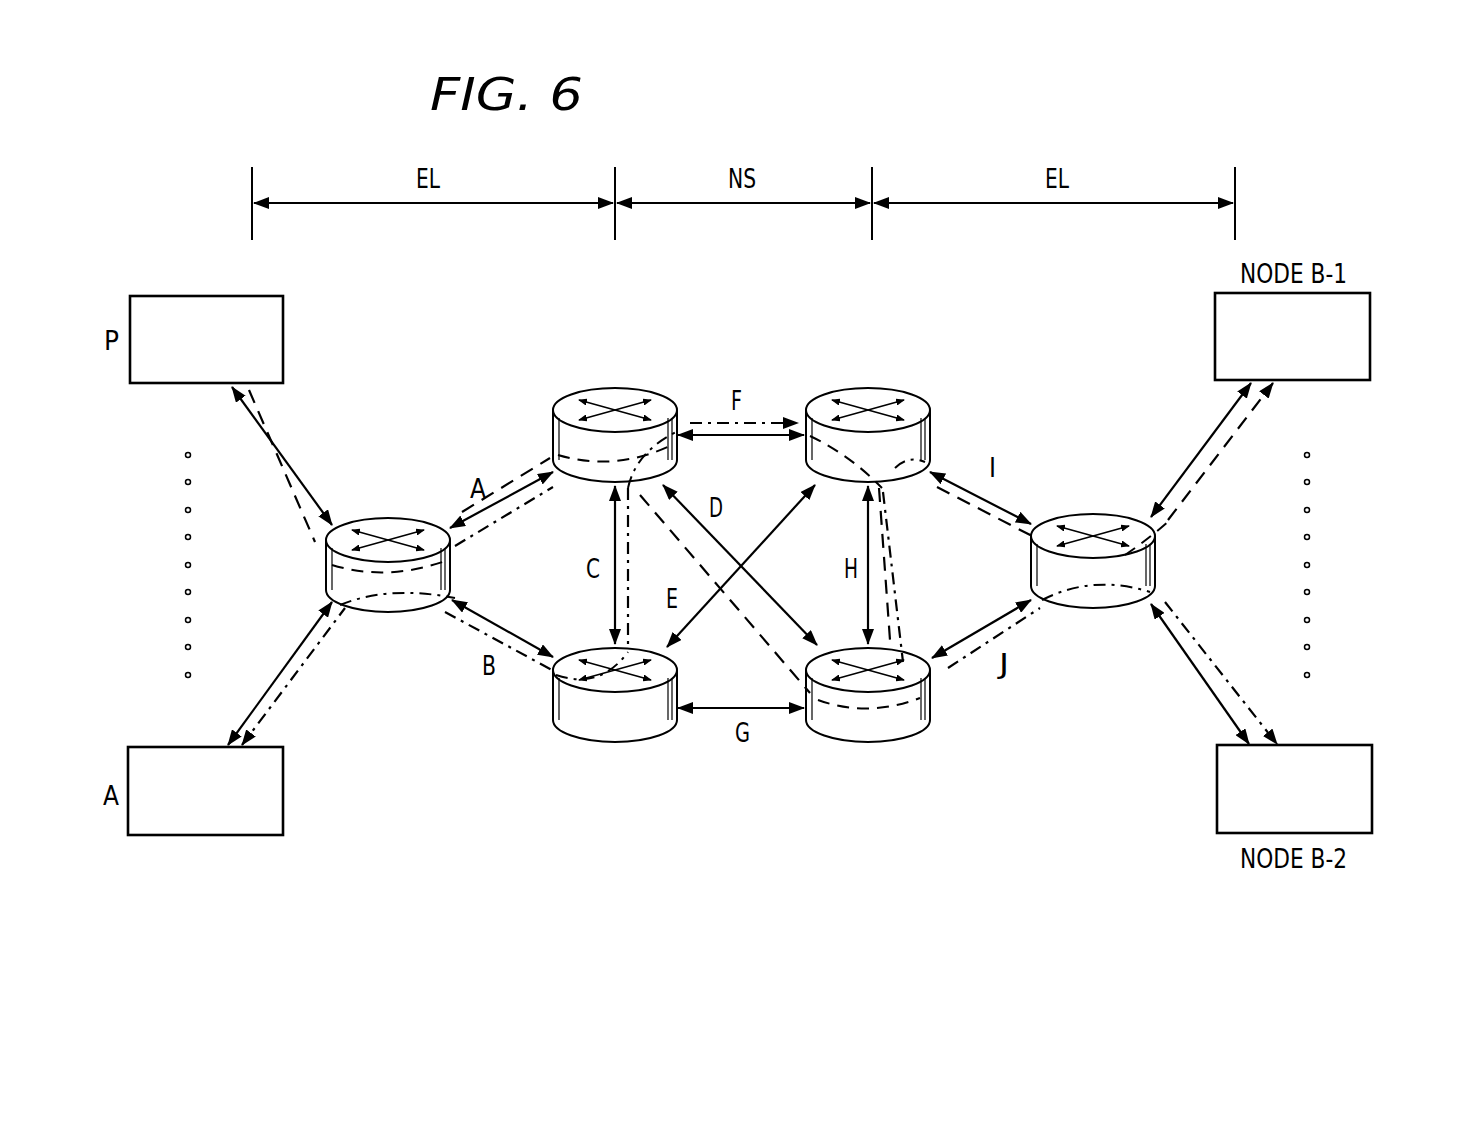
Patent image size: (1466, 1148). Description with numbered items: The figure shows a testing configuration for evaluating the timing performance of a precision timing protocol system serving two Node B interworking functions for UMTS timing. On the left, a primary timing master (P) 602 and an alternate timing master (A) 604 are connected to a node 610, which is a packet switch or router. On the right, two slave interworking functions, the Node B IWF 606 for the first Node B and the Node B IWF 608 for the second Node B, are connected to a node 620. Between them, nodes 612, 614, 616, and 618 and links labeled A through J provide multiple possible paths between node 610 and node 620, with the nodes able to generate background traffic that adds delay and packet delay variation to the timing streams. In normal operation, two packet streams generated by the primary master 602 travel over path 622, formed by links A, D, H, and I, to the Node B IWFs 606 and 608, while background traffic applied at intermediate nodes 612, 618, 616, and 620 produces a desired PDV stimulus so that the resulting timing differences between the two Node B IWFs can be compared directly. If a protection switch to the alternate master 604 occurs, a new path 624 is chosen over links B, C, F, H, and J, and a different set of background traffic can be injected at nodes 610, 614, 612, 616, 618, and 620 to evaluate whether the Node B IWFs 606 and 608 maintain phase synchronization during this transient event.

The primary IEEE 1588 Master (P) 602 is at (183, 295).
The alternate IEEE 1588 Master (A) 604 is at (196, 836).
The Node B IWF (Node B-1) 606 is at (1371, 333).
The Node B IWF (Node B-2) 608 is at (1373, 792).
The node 610 is at (390, 517).
The intermediate node 612 is at (618, 387).
The node 614 is at (614, 743).
The intermediate node 616 is at (872, 387).
The intermediate node 618 is at (866, 743).
The intermediate node 620 is at (1095, 510).
The path 622 is at (770, 654).
The new path 624 is at (772, 422).